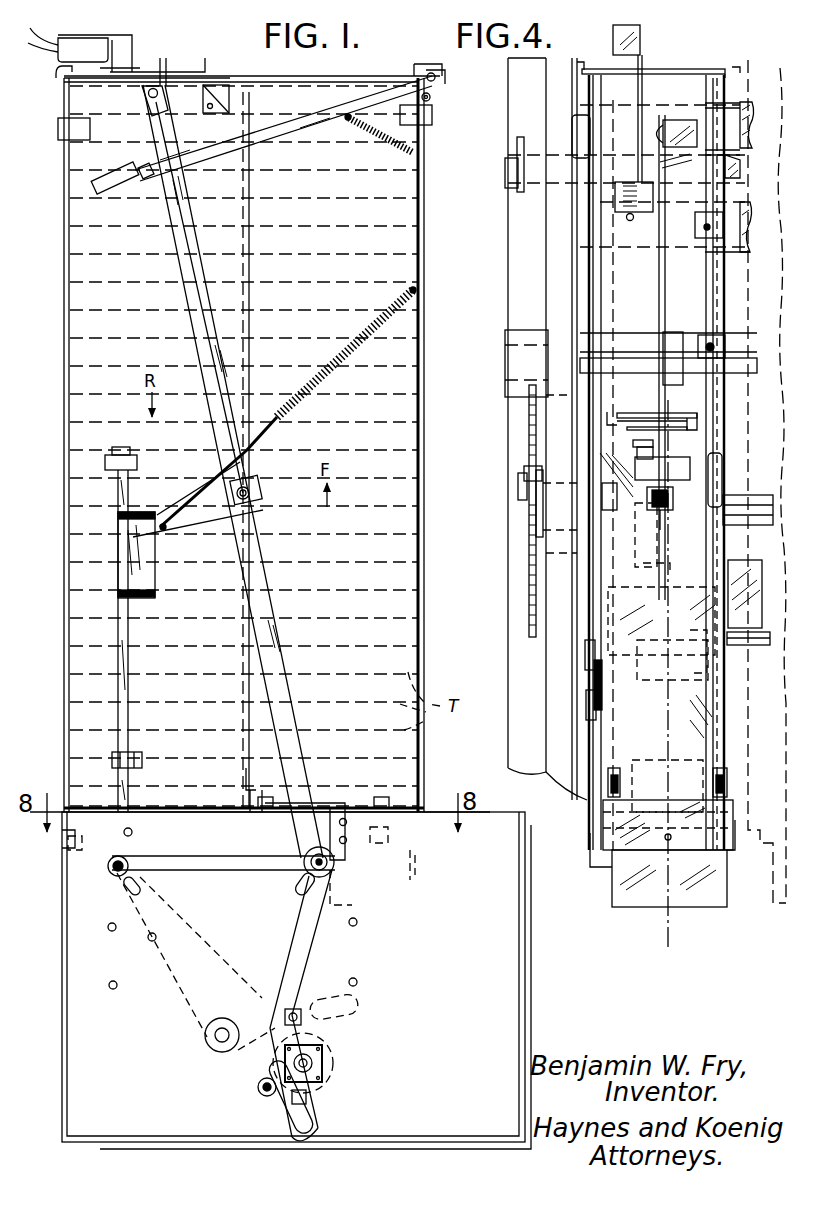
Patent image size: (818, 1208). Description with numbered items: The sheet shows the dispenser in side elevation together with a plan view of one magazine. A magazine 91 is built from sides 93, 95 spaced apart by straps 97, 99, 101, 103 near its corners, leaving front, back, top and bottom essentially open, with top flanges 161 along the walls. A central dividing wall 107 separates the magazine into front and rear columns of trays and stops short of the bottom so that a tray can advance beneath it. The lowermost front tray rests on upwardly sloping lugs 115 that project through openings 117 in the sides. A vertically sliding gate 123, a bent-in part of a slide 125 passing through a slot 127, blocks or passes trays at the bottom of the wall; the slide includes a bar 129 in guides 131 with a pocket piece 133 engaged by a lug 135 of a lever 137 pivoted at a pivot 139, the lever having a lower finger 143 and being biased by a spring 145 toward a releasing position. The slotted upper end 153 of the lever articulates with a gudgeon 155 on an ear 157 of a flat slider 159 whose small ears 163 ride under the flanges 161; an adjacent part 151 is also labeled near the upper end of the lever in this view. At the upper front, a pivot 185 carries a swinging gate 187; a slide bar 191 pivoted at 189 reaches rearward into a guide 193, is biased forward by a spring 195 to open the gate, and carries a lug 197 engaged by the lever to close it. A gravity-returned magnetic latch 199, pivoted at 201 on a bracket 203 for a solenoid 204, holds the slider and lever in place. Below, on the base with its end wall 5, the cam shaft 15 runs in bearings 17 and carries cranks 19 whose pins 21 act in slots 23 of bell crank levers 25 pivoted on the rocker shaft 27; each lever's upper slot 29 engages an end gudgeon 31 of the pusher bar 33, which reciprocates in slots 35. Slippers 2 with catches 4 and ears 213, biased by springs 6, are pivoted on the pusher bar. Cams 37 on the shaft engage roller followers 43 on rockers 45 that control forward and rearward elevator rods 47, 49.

In FIG. 4, the slipper 2 is at (643, 62).
In FIG. 4, the catch 4 is at (636, 50).
In FIG. 1, the end wall 5 is at (490, 976).
In FIG. 4, the end wall 5 is at (682, 402).
In FIG. 4, the spring 6 is at (630, 221).
In FIG. 1, the cam shaft 15 is at (320, 1060).
In FIG. 4, the cam shaft 15 is at (757, 502).
In FIG. 1, the bearing 17 is at (347, 1073).
In FIG. 4, the bearing 17 is at (548, 552).
In FIG. 1, the crank 19 is at (312, 1022).
In FIG. 4, the crank 19 is at (530, 466).
In FIG. 1, the pin 21 is at (253, 1083).
In FIG. 4, the pin 21 is at (518, 490).
In FIG. 1, the slot 23 is at (317, 1006).
In FIG. 1, the bell crank lever 25 is at (302, 953).
In FIG. 4, the bell crank lever 25 is at (527, 272).
In FIG. 1, the rocker shaft 27 is at (217, 1040).
In FIG. 1, the slot 29 is at (305, 889).
In FIG. 1, the end gudgeon 31 is at (112, 875).
In FIG. 4, the end gudgeon 31 is at (507, 168).
In FIG. 4, the pusher bar 33 is at (740, 165).
In FIG. 1, the slot 35 is at (203, 868).
In FIG. 4, the cam 37 is at (673, 565).
In FIG. 4, the roller follower 43 is at (655, 512).
In FIG. 4, the rocker 45 is at (659, 275).
In FIG. 4, the forward elevator rod 47 is at (677, 614).
In FIG. 4, the rearward elevator rod 49 is at (668, 120).
In FIG. 1, the magazine 91 is at (66, 390).
In FIG. 4, the magazine 91 is at (598, 735).
In FIG. 1, the side 93 is at (97, 331).
In FIG. 4, the side 93 is at (589, 277).
In FIG. 4, the side 95 is at (722, 280).
In FIG. 1, the strap 97 is at (420, 870).
In FIG. 1, the strap 99 is at (412, 72).
In FIG. 1, the strap 101 is at (58, 128).
In FIG. 1, the strap 103 is at (62, 846).
In FIG. 1, the central dividing wall 107 is at (243, 272).
In FIG. 4, the central dividing wall 107 is at (698, 416).
In FIG. 1, the lug 115 is at (262, 797).
In FIG. 1, the opening 117 is at (271, 803).
In FIG. 1, the gate 123 is at (247, 798).
In FIG. 4, the gate 123 is at (683, 420).
In FIG. 1, the slide 125 is at (182, 807).
In FIG. 4, the slide 125 is at (590, 298).
In FIG. 1, the slot 127 is at (246, 767).
In FIG. 1, the bar 129 is at (128, 657).
In FIG. 4, the bar 129 is at (590, 128).
In FIG. 1, the guide 131 is at (107, 453).
In FIG. 1, the pocket piece 133 is at (150, 572).
In FIG. 1, the lug 135 is at (177, 507).
In FIG. 1, the lever 137 is at (171, 133).
In FIG. 1, the pivot 139 is at (255, 494).
In FIG. 1, the finger 143 is at (352, 903).
In FIG. 1, the spring 145 is at (323, 372).
In FIG. 1, the pin 151 is at (162, 84).
In FIG. 1, the slot 153 is at (160, 112).
In FIG. 4, the slot 153 is at (593, 680).
In FIG. 1, the gudgeon 155 is at (148, 97).
In FIG. 4, the gudgeon 155 is at (583, 660).
In FIG. 1, the ear 157 is at (171, 92).
In FIG. 4, the ear 157 is at (598, 700).
In FIG. 1, the slider 159 is at (213, 76).
In FIG. 4, the slider 159 is at (710, 690).
In FIG. 1, the top flange 161 is at (356, 78).
In FIG. 4, the top flange 161 is at (603, 322).
In FIG. 4, the ear 163 is at (610, 477).
In FIG. 1, the pivot 185 is at (434, 73).
In FIG. 1, the swinging gate 187 is at (433, 98).
In FIG. 1, the pivot 189 is at (416, 115).
In FIG. 1, the slide bar 191 is at (285, 139).
In FIG. 1, the guide 193 is at (127, 170).
In FIG. 1, the spring 195 is at (380, 140).
In FIG. 1, the lug 197 is at (148, 177).
In FIG. 1, the magnetic latch 199 is at (62, 80).
In FIG. 1, the pivot 201 is at (140, 68).
In FIG. 1, the bracket 203 is at (115, 67).
In FIG. 1, the solenoid 204 is at (66, 52).
In FIG. 4, the ear 213 is at (578, 62).